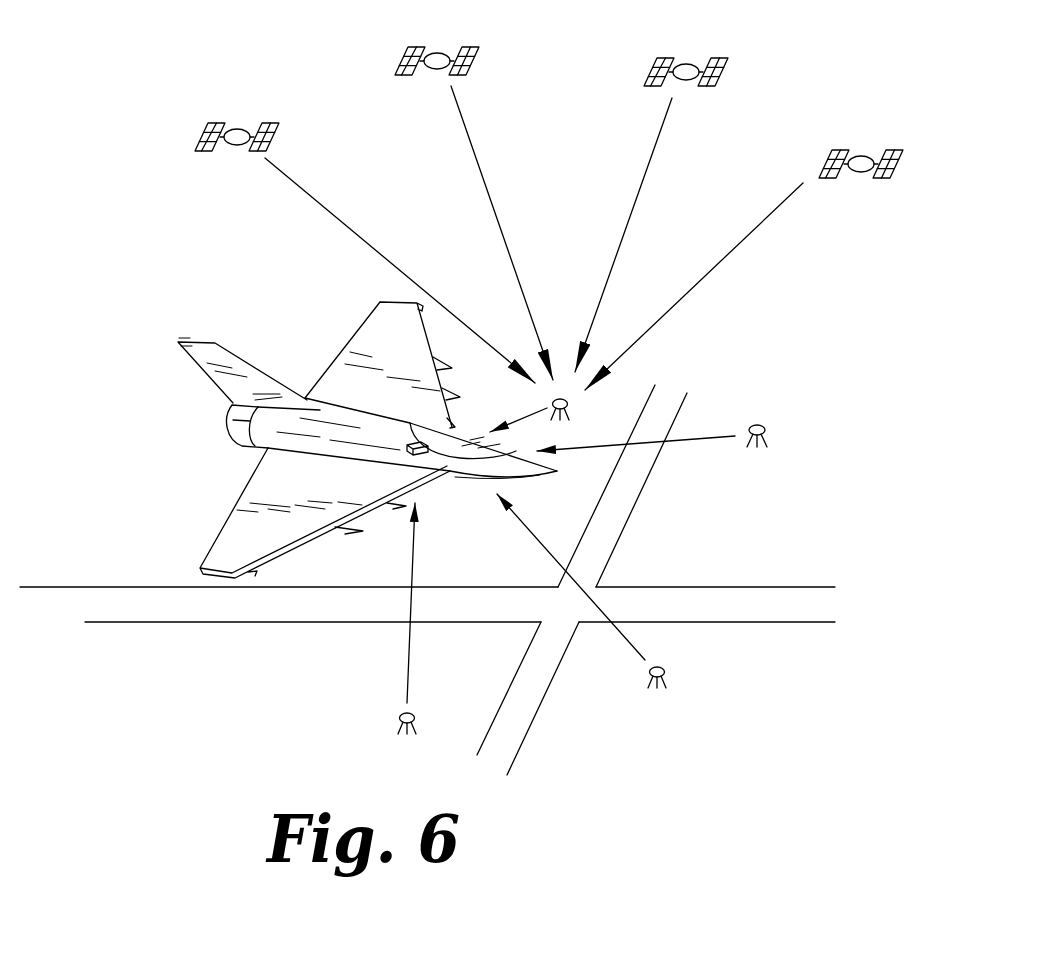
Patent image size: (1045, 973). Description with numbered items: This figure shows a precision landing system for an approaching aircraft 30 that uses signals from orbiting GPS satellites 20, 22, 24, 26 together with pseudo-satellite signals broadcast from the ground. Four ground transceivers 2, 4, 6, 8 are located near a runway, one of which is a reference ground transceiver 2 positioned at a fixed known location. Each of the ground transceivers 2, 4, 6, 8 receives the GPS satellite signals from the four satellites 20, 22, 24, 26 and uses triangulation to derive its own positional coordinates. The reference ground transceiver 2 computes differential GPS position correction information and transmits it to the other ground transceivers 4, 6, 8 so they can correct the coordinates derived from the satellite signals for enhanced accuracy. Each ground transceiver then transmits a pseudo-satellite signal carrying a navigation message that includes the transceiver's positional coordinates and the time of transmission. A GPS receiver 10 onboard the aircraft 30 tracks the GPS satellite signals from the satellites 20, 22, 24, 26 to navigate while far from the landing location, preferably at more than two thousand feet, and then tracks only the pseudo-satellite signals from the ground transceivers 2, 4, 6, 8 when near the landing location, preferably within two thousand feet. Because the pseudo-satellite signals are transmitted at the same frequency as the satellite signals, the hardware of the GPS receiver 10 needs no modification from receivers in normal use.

The reference ground transceiver 2 is at (572, 406).
The ground transceiver 4 is at (775, 436).
The ground transceiver 6 is at (672, 676).
The ground transceiver 8 is at (418, 721).
The GPS receiver 10 is at (428, 453).
The GPS satellite 20 is at (836, 151).
The GPS satellite 22 is at (662, 58).
The GPS satellite 24 is at (412, 47).
The GPS satellite 26 is at (212, 125).
The aircraft 30 is at (190, 351).